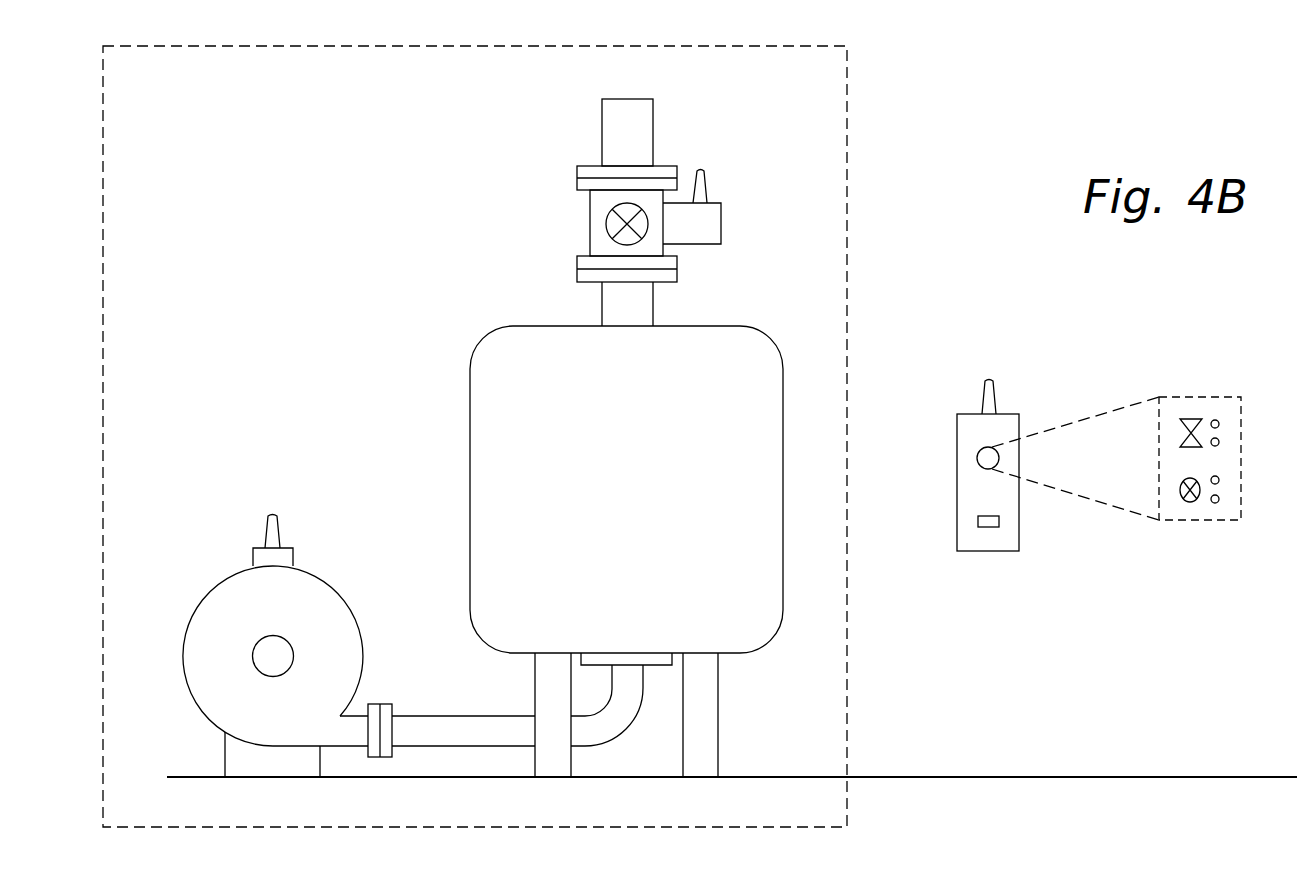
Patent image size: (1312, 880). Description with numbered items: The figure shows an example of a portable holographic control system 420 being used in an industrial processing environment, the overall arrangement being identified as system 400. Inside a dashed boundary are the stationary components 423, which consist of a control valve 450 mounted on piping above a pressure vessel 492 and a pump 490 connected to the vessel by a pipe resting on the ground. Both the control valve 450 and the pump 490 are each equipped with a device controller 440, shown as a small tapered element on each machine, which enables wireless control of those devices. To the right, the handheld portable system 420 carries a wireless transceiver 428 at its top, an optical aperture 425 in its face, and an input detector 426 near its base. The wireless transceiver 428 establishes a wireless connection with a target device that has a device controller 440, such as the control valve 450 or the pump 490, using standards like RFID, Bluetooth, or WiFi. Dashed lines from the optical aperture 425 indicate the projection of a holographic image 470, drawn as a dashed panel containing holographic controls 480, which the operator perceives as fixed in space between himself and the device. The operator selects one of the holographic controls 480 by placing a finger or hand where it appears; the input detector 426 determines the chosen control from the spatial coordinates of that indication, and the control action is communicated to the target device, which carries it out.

The pool system 400 is at (984, 120).
The stationary components 423 is at (847, 83).
The device controller 440 is at (709, 184).
The control valve 450 is at (590, 219).
The pressure vessel 492 is at (469, 447).
The pump 490 is at (218, 582).
The portable holographic control system 420 is at (957, 491).
The optical aperture 425 is at (1000, 457).
The input detector 426 is at (988, 527).
The wireless transceiver 428 is at (991, 378).
The holographic image 470 is at (1206, 397).
The holographic controls 480 is at (1222, 430).